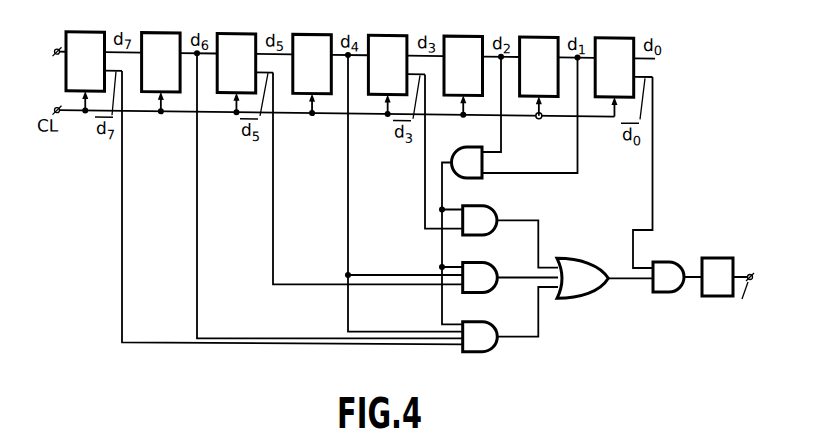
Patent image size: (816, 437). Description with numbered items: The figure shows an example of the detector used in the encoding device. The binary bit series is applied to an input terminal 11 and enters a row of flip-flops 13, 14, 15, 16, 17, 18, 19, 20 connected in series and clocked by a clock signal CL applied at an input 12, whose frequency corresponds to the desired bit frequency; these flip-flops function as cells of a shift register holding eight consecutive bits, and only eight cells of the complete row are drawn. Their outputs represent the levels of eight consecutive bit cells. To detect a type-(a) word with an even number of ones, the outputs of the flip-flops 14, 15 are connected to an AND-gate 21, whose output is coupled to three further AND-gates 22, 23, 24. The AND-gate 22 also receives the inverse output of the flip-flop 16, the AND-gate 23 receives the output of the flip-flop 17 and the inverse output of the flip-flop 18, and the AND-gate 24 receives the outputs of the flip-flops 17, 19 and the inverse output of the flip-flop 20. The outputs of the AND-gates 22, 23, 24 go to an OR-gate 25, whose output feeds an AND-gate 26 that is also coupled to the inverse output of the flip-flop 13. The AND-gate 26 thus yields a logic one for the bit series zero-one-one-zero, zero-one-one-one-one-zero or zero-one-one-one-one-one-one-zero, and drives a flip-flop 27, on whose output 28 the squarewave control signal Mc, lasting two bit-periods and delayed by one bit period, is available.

The input terminal 11 is at (56, 47).
The clock input 12 is at (57, 112).
The flip-flop 13 is at (615, 31).
The flip-flop 14 is at (539, 31).
The flip-flop 15 is at (464, 31).
The flip-flop 16 is at (388, 31).
The flip-flop 17 is at (312, 31).
The flip-flop 18 is at (237, 31).
The flip-flop 19 is at (161, 31).
The flip-flop 20 is at (85, 31).
The AND-gate 21 is at (463, 147).
The AND-gate 22 is at (482, 205).
The AND-gate 23 is at (478, 262).
The AND-gate 24 is at (480, 321).
The OR-gate 25 is at (583, 259).
The AND-gate 26 is at (668, 262).
The flip-flop 27 is at (717, 258).
The output 28 is at (749, 274).